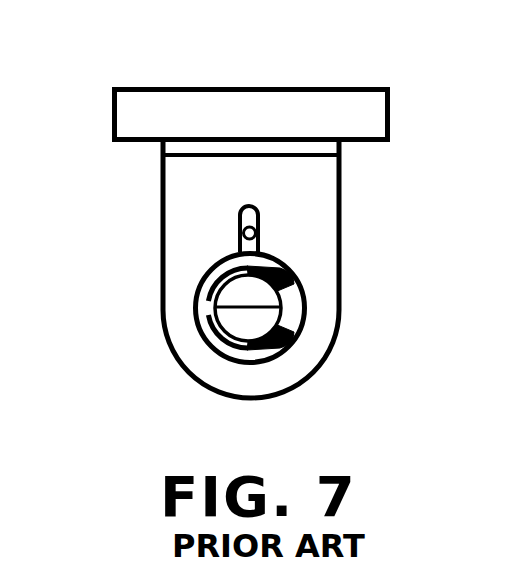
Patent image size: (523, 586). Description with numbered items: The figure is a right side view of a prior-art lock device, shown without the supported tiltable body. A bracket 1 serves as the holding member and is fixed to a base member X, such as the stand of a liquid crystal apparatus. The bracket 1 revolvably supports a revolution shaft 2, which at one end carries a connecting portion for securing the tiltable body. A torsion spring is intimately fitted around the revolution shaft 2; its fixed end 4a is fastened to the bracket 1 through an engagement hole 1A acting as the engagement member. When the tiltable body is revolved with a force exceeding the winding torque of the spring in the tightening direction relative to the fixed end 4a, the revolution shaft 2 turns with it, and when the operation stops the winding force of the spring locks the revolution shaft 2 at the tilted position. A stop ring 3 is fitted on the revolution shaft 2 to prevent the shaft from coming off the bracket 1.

The base member X is at (300, 87).
The bracket 1 is at (163, 232).
The engagement hole 1A is at (262, 215).
The fixed end 4a is at (260, 240).
The revolution shaft 2 is at (265, 320).
The stop ring 3 is at (207, 341).